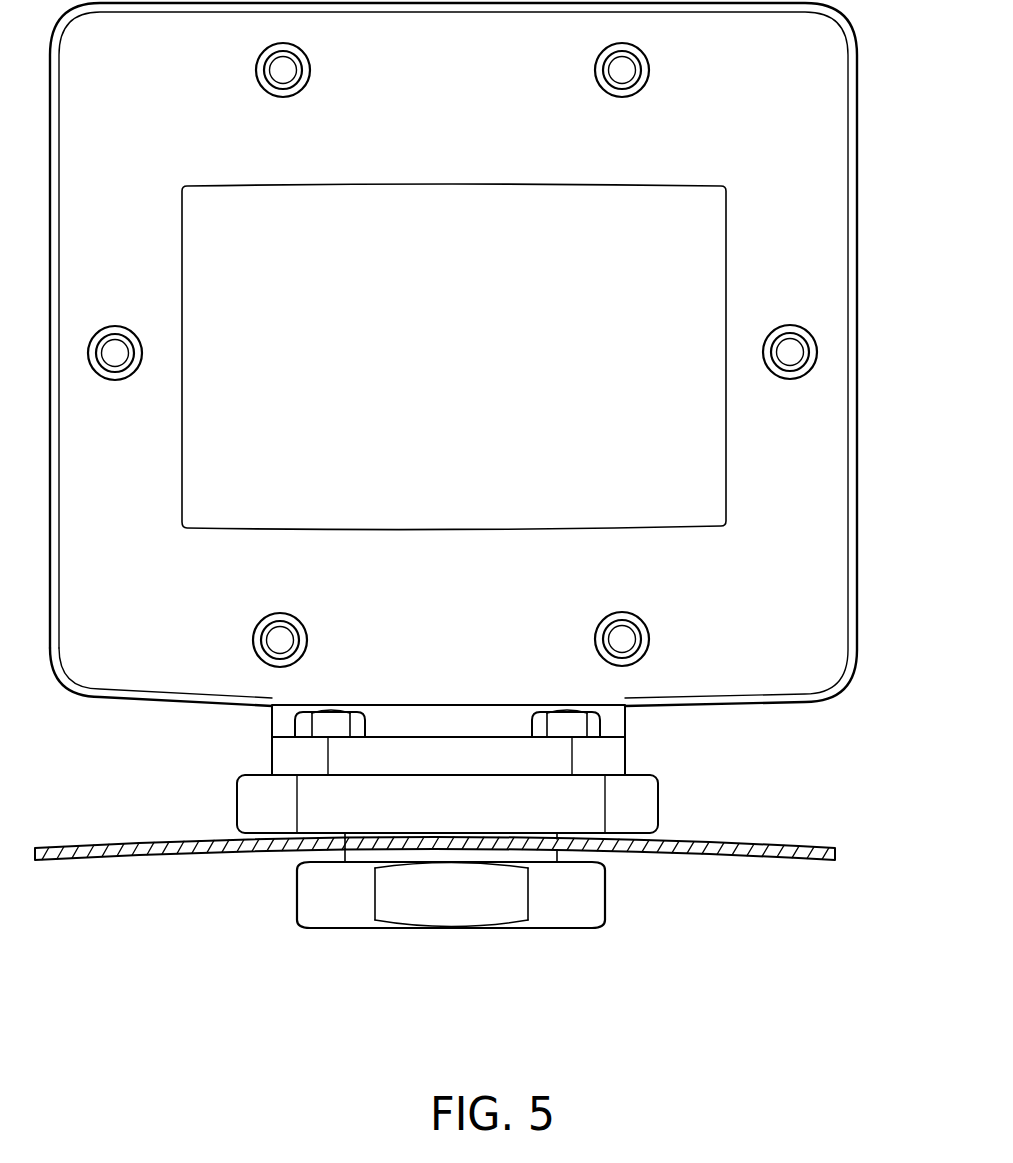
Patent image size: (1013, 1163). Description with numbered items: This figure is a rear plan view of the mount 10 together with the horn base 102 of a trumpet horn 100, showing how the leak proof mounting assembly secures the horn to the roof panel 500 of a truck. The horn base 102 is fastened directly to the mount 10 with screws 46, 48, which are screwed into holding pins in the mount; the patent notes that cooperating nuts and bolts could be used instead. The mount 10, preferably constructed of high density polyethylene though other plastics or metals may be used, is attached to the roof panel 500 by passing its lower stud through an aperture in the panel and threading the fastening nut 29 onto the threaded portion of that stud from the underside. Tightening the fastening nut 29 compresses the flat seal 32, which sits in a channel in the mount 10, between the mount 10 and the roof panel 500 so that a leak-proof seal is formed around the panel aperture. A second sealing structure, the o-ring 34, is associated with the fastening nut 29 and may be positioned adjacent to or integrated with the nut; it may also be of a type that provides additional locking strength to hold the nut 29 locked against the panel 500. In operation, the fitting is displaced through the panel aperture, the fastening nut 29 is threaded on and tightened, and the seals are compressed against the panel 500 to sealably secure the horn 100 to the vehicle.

The trumpet horn 100 is at (857, 560).
The horn base 102 is at (620, 752).
The screw 48 is at (327, 722).
The screw 46 is at (568, 722).
The mount 10 is at (645, 800).
The o-ring 34 is at (557, 856).
The roof panel 500 is at (67, 848).
The flat seal 32 is at (345, 838).
The fastening nut 29 is at (605, 903).